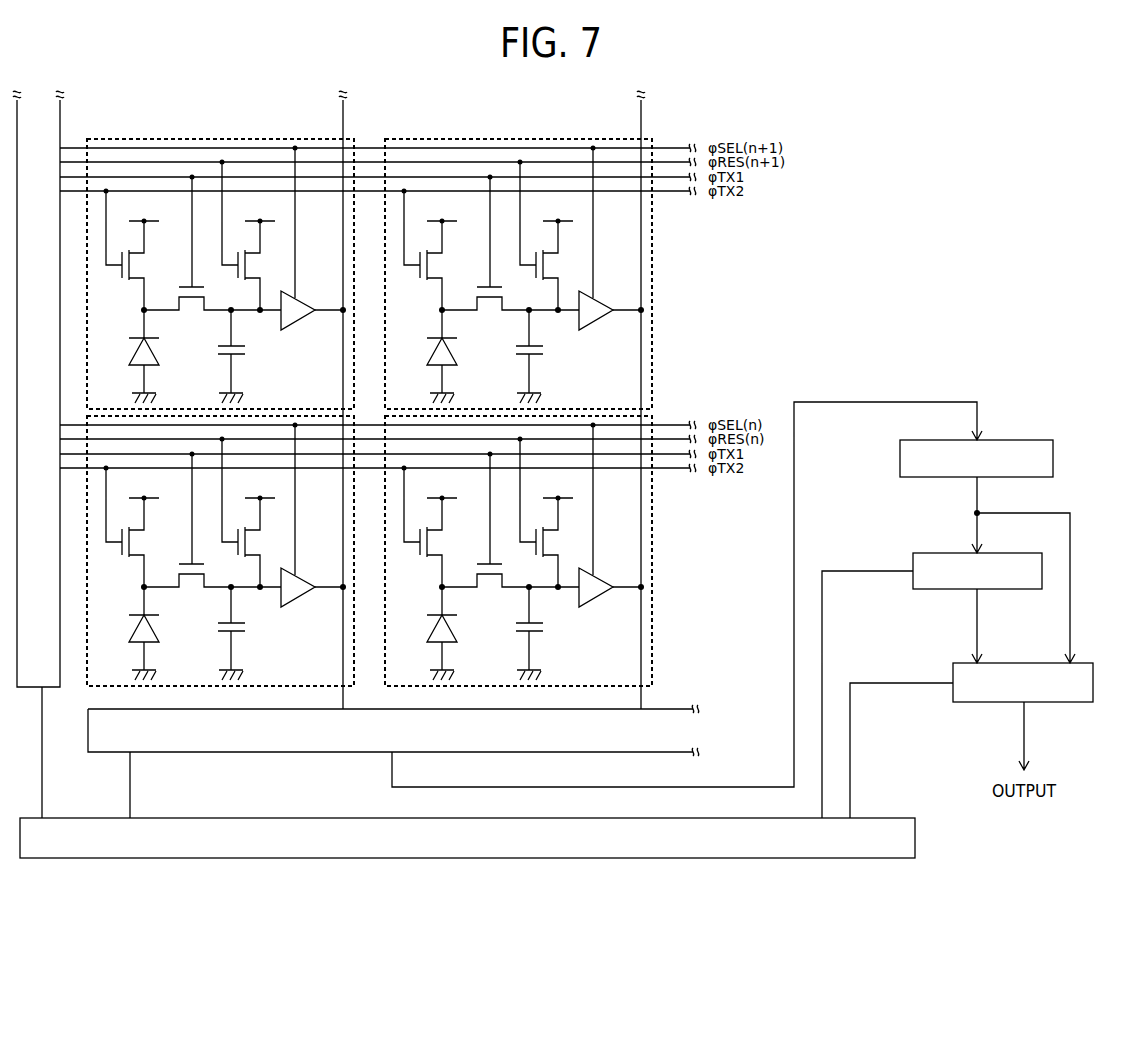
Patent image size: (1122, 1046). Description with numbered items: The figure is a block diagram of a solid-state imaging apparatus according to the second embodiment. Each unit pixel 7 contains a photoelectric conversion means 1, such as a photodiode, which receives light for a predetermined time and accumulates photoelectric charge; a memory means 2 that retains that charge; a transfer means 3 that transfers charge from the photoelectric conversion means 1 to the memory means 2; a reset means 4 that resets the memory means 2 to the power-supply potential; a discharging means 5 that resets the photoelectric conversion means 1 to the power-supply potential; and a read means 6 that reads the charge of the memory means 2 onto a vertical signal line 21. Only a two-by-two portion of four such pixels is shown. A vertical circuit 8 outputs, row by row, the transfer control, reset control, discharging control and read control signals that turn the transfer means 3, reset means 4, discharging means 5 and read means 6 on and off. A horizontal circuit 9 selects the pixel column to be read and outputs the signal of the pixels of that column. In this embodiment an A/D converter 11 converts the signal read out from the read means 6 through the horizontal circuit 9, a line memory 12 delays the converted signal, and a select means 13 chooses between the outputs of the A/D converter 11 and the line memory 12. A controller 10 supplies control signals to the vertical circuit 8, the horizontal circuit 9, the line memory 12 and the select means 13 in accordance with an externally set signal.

The photoelectric conversion means 1 is at (459, 352).
The memory means 2 is at (543, 353).
The transfer means 3 is at (483, 288).
The reset means 4 is at (559, 266).
The discharging means 5 is at (419, 278).
The read means 6 is at (598, 321).
The unit pixel 7 is at (503, 139).
The vertical circuit 8 is at (48, 688).
The horizontal circuit 9 is at (315, 753).
The controller 10 is at (915, 838).
The A/D converter 11 is at (1019, 440).
The line memory 12 is at (940, 590).
The select means 13 is at (1060, 703).
The vertical signal line 21 is at (641, 375).